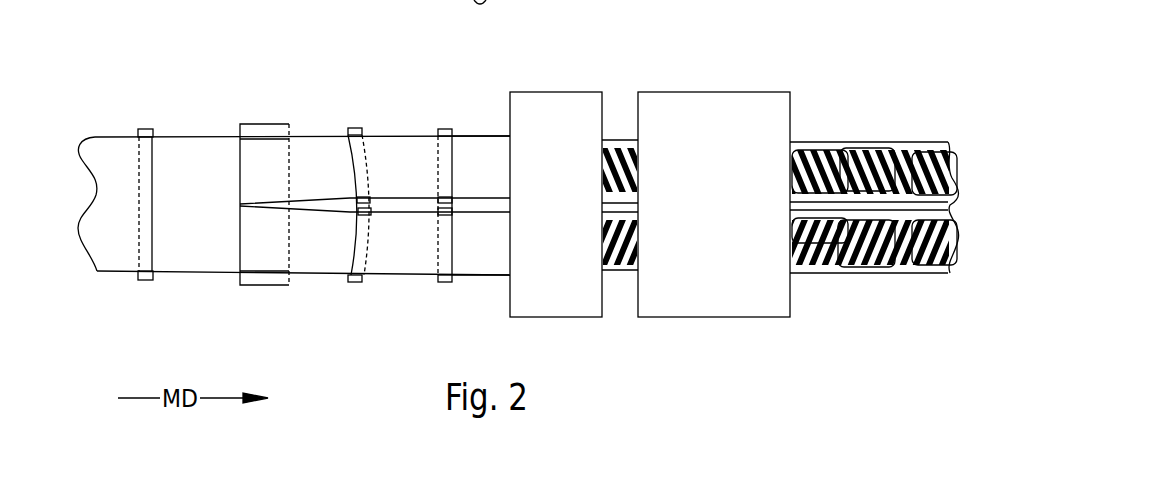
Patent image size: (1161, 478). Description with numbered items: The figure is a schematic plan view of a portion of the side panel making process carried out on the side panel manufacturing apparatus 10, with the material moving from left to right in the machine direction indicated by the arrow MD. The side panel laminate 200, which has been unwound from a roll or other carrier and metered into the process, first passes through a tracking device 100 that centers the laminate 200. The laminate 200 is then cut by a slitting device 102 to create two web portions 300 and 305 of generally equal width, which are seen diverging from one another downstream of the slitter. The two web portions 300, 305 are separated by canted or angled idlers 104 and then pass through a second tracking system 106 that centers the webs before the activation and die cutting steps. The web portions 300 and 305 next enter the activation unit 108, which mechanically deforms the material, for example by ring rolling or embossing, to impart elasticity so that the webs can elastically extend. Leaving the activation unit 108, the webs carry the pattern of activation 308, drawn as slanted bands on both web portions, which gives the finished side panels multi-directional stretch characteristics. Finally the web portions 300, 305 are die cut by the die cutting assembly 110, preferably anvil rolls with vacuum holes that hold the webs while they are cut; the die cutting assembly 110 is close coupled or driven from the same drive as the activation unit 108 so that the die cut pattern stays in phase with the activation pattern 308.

The side panel manufacturing apparatus 10 is at (397, 349).
The tracking device 100 is at (145, 280).
The slitting device 102 is at (267, 124).
The canted or angled idlers 104 is at (355, 283).
The second tracking system 106 is at (448, 128).
The activation unit 108 is at (555, 300).
The die cutting assembly 110 is at (670, 292).
The side panel laminate 200 is at (113, 142).
The web portion 300 is at (488, 157).
The web portion 305 is at (490, 262).
The pattern of activation 308 is at (618, 145).